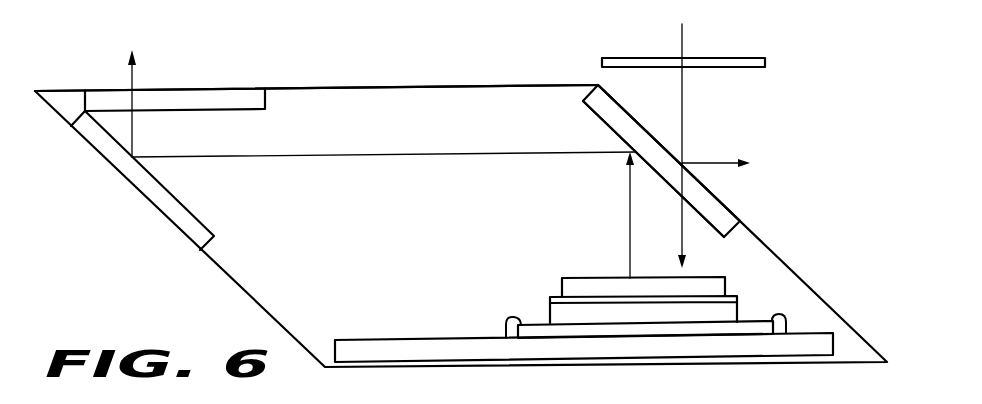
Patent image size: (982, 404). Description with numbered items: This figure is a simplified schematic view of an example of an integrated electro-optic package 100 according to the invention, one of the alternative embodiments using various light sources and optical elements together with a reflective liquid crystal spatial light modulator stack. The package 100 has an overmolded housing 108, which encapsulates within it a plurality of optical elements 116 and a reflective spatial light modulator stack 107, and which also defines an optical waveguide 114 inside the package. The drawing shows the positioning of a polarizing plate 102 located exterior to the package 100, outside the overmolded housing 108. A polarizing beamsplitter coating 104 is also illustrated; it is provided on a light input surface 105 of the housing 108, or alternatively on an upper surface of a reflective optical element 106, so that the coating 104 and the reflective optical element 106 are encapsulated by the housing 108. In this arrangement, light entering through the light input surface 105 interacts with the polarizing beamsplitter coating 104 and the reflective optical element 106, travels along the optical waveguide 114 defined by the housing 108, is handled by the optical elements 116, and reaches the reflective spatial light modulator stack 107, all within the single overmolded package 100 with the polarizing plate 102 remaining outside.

The electro-optic package 100 is at (133, 322).
The polarizing plate 102 is at (733, 57).
The polarizing beamsplitter coating 104 is at (743, 214).
The light input surface 105 is at (640, 119).
The reflective optical element 106 is at (591, 112).
The reflective spatial light modulator stack 107 is at (581, 277).
The overmolded housing 108 is at (396, 86).
The optical waveguide 114 is at (445, 237).
The optical elements 116 is at (228, 111).